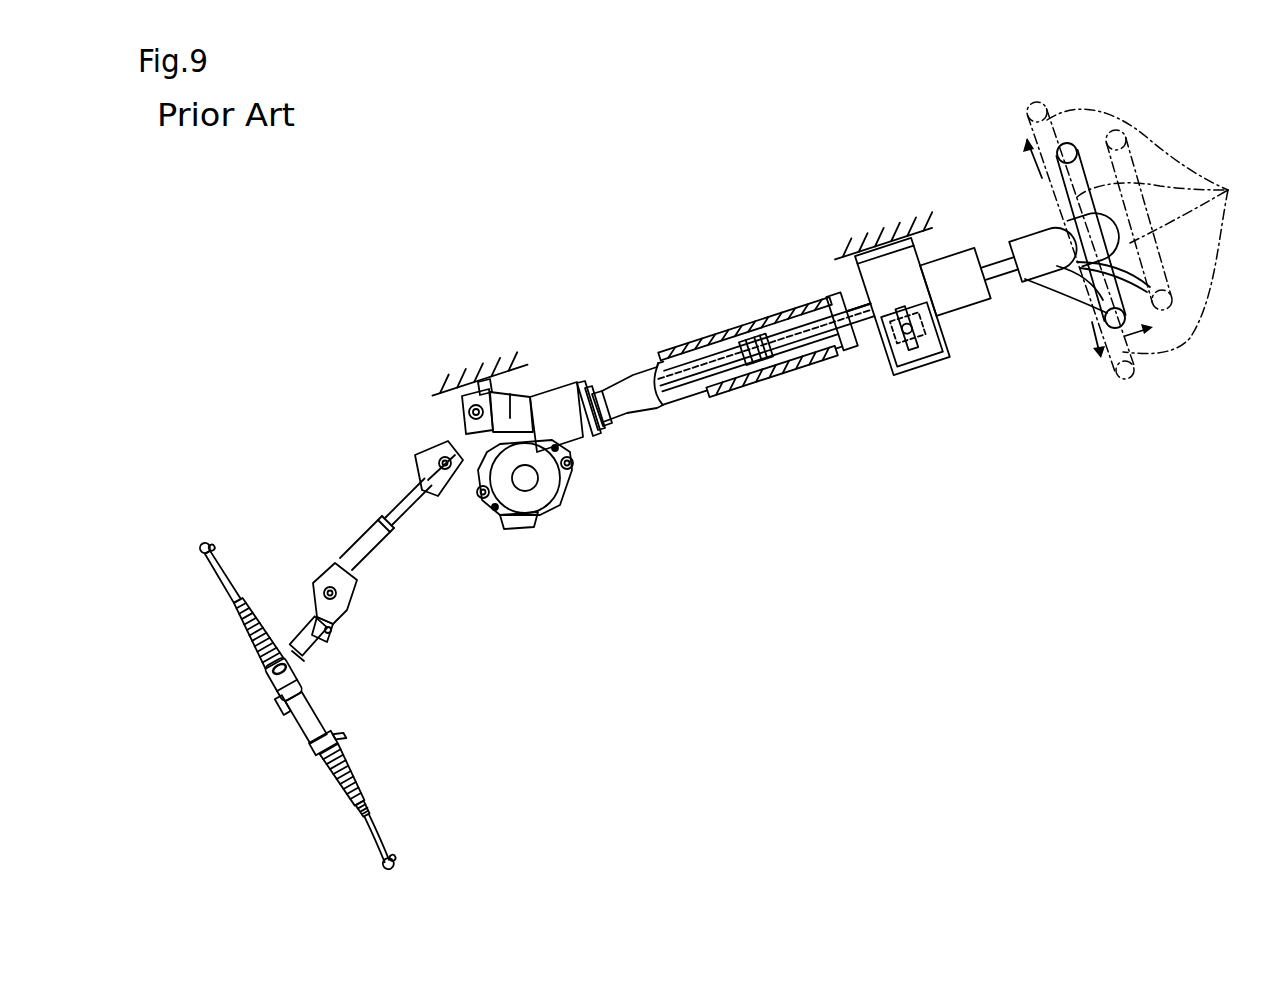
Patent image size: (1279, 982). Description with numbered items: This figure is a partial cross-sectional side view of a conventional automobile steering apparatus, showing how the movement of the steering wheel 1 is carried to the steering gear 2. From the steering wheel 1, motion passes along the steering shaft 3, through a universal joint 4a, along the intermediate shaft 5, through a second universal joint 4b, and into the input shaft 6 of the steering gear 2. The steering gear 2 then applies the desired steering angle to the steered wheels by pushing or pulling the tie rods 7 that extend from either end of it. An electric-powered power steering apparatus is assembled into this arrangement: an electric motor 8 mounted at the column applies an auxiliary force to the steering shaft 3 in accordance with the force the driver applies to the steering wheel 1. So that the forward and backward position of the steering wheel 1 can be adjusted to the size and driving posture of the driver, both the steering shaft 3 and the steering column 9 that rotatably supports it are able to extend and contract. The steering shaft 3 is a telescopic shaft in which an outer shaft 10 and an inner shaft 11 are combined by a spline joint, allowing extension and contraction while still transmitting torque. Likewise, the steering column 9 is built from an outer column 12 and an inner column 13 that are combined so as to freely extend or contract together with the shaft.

The steering wheel 1 is at (1226, 191).
The steering gear 2 is at (270, 672).
The steering shaft 3 is at (798, 314).
The universal joint 4a is at (437, 496).
The universal joint 4b is at (340, 620).
The intermediate shaft 5 is at (365, 557).
The input shaft 6 is at (300, 627).
The tie rods 7 is at (210, 576).
The electric motor 8 is at (548, 488).
The steering column 9 is at (772, 380).
The outer shaft 10 is at (812, 364).
The inner shaft 11 is at (703, 367).
The outer column 12 is at (963, 297).
The inner column 13 is at (690, 397).